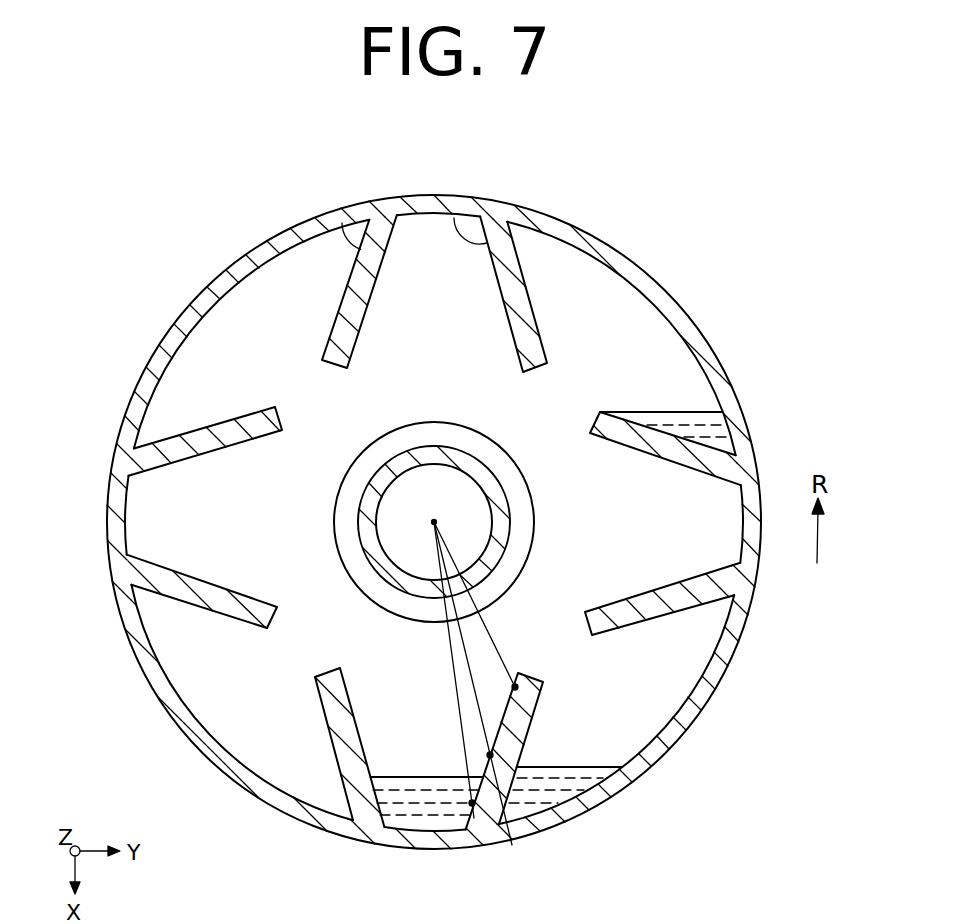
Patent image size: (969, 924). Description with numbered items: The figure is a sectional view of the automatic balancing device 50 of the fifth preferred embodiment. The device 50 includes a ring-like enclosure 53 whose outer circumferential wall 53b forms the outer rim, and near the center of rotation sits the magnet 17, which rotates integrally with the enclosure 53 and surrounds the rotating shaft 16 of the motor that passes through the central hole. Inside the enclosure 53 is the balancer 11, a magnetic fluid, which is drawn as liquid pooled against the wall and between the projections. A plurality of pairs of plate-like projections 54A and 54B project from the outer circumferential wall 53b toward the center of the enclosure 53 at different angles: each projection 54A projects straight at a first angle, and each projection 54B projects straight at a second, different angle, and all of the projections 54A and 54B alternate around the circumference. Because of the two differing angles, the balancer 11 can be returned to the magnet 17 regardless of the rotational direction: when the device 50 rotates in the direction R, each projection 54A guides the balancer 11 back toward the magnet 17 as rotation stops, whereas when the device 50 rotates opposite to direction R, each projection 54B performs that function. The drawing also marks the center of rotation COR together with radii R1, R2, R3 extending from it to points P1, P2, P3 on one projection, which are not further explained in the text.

The automatic balancing device 50 is at (436, 184).
The enclosure 53 is at (745, 413).
The outer circumferential wall 53b is at (697, 340).
The plate-like projection 54A is at (342, 307).
The plate-like projection 54B is at (540, 323).
The magnet 17 is at (505, 482).
The rotating shaft 16 is at (423, 497).
The balancer 11 is at (436, 806).
The first radius R1 is at (465, 740).
The second radius R2 is at (467, 672).
The third radius R3 is at (492, 641).
The first point P1 is at (472, 803).
The second point P2 is at (512, 845).
The third point P3 is at (518, 688).
The center of rotation COR is at (434, 522).